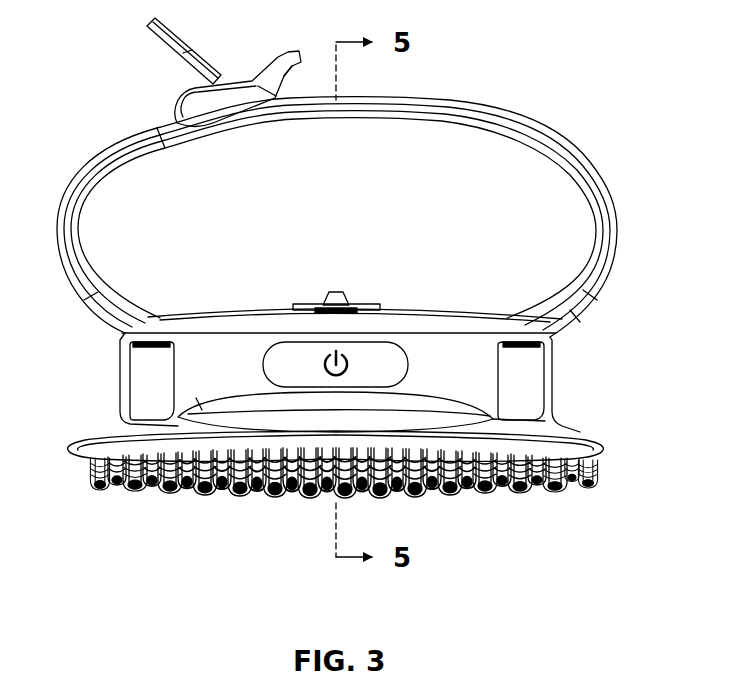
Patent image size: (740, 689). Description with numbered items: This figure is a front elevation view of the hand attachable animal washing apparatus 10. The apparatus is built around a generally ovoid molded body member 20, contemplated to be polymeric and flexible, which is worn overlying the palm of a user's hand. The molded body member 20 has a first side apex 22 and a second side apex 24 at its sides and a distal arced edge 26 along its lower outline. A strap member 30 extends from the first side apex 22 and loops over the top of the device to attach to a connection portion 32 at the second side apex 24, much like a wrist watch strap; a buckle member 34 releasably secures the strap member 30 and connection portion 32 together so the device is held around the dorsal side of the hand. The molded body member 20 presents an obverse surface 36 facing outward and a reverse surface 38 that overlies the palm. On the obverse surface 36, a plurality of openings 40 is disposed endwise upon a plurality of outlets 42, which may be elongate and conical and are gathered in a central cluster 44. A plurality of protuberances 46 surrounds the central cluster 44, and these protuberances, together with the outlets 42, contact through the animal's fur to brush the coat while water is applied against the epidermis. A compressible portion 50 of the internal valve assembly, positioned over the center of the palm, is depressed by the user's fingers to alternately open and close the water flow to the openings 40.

The hand attachable animal washing apparatus 10 is at (606, 93).
The molded body member 20 is at (473, 317).
The first side apex 22 is at (576, 438).
The second side apex 24 is at (82, 439).
The distal arced edge 26 is at (496, 496).
The strap member 30 is at (457, 108).
The connection portion 32 is at (100, 153).
The buckle member 34 is at (228, 82).
The obverse surface 36 is at (96, 516).
The reverse surface 38 is at (246, 312).
The plurality of openings 40 is at (369, 504).
The plurality of outlets 42 is at (282, 495).
The central cluster 44 is at (222, 506).
The plurality of protuberances 46 is at (143, 490).
The compressible portion 50 is at (396, 354).